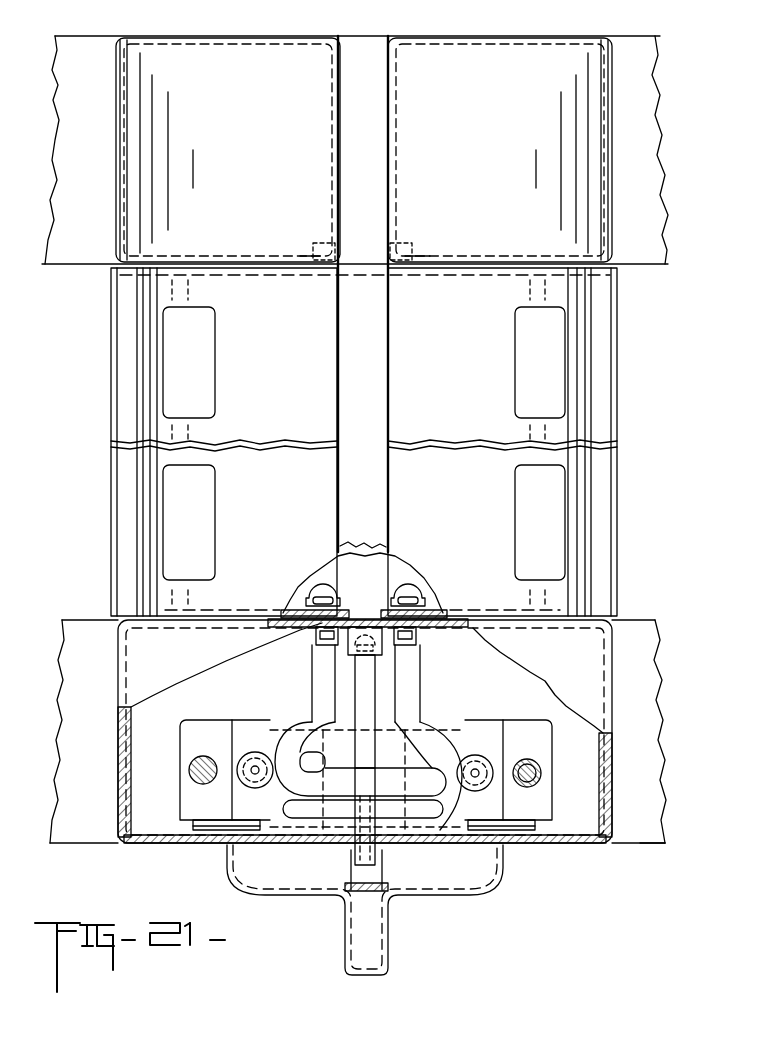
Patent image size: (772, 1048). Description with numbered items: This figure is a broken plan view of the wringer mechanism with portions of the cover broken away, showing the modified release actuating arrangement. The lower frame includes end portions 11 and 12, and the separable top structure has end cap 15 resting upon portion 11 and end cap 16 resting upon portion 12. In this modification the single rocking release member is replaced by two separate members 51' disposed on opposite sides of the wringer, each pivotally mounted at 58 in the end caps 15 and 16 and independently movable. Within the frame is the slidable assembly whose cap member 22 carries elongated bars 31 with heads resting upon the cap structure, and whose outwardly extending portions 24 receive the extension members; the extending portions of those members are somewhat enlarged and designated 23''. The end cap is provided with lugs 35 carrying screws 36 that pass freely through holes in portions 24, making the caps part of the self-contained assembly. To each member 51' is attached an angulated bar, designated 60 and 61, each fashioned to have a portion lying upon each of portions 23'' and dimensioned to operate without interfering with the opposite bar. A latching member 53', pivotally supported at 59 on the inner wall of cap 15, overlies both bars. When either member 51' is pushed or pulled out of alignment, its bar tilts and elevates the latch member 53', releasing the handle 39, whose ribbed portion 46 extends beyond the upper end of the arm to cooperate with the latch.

The end portion 12 is at (640, 52).
The end cap 16 is at (364, 150).
The release member 51' is at (364, 442).
The end cap 15 is at (358, 731).
The pivot 58 is at (322, 645).
The pivot support 59 is at (383, 656).
The latching member 53' is at (413, 760).
The angulated bar 61 is at (316, 699).
The angulated bar 60 is at (413, 707).
The enlarged extending portion 23'' is at (378, 752).
The outwardly extending portion 24 is at (183, 745).
The cap member 22 is at (490, 735).
The elongated bar 31 is at (248, 752).
The lug 35 is at (541, 765).
The screw 36 is at (540, 780).
The arm or handle 39 is at (445, 897).
The ribbed portion 46 is at (378, 978).
The end portion 11 is at (650, 846).